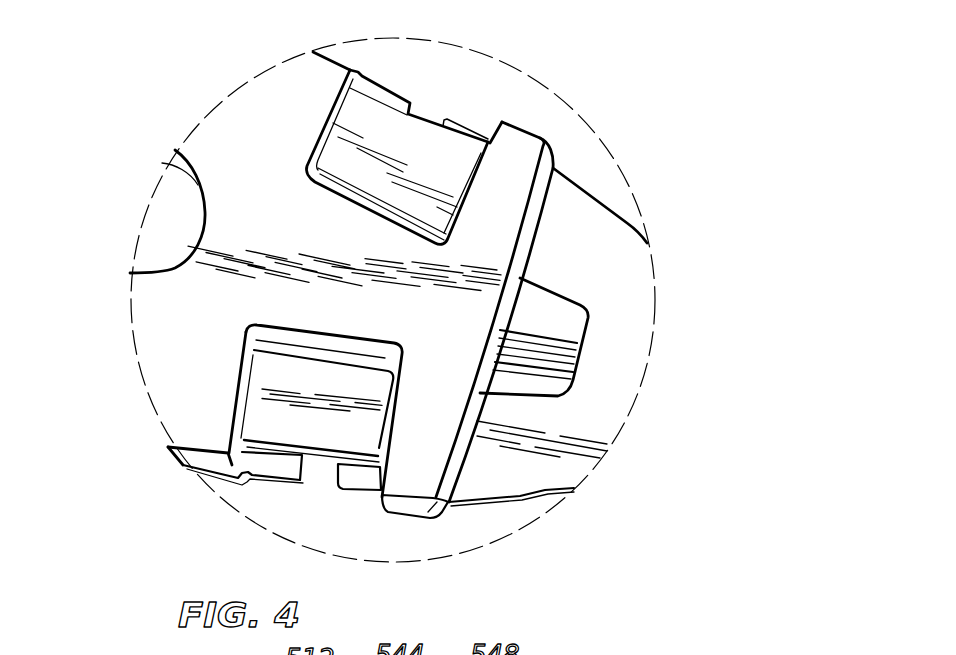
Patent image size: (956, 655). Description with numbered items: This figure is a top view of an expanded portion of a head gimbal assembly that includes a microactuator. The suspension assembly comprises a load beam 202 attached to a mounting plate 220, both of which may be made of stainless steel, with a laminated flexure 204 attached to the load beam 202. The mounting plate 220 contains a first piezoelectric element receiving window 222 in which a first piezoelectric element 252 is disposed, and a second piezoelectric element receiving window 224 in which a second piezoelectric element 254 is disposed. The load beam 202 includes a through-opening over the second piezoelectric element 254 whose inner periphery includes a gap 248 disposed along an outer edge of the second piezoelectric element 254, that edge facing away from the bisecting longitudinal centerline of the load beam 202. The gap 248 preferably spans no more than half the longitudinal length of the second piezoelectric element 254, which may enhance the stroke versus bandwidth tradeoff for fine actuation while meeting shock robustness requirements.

The load beam 202 is at (612, 248).
The laminated flexure 204 is at (550, 352).
The mounting plate 220 is at (517, 170).
The first piezoelectric element receiving window 222 is at (310, 163).
The second piezoelectric element receiving window 224 is at (247, 336).
The gap 248 is at (318, 474).
The first piezoelectric element 252 is at (417, 143).
The second piezoelectric element 254 is at (275, 421).